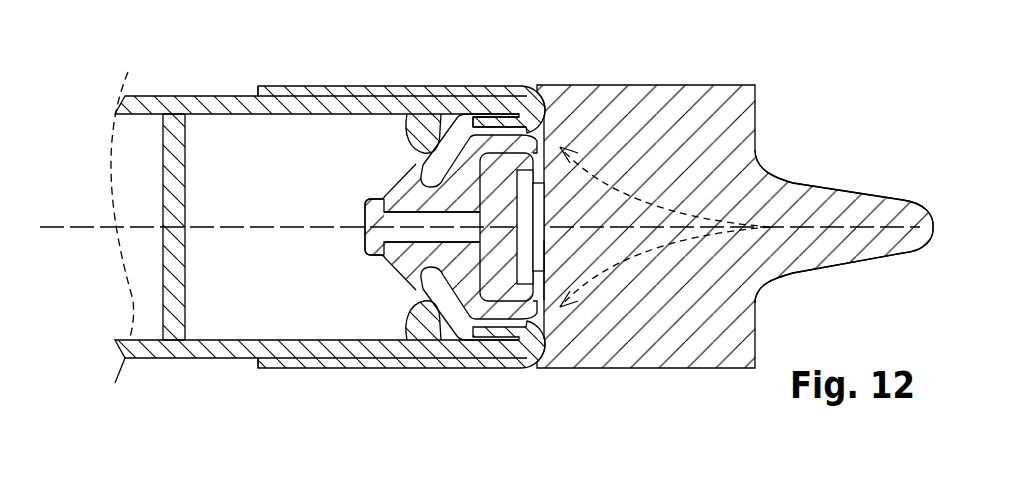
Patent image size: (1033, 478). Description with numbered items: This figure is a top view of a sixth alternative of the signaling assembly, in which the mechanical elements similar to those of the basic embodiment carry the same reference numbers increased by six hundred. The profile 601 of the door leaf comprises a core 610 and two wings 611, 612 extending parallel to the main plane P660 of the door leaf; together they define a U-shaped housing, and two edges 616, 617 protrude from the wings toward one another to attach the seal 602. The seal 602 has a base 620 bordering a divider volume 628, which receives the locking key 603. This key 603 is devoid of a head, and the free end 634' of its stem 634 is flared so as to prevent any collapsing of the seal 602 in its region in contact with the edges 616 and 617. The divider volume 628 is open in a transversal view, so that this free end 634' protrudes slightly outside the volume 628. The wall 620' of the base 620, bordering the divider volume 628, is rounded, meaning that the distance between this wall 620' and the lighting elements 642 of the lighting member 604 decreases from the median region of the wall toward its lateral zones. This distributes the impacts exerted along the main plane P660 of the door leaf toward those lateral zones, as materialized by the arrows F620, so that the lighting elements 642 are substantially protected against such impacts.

The profile 601 is at (158, 73).
The seal 602 is at (812, 88).
The locking key 603 is at (460, 240).
The lighting member 604 is at (545, 136).
The core of the profile 610 is at (177, 193).
The wing of the profile 611 is at (302, 102).
The wing of the profile 612 is at (233, 347).
The edge of the profile 616 is at (432, 152).
The edge of the profile 617 is at (437, 294).
The base of the seal 620 is at (735, 226).
The wall of the base 620' is at (611, 325).
The divider volume of the seal 628 is at (519, 286).
The stem of the key 634 is at (380, 311).
The free end of the stem 634' is at (328, 243).
The lighting elements 642 is at (563, 240).
The arrows materializing impact distribution F620 is at (603, 173).
The main plane of the door leaf P660 is at (480, 214).